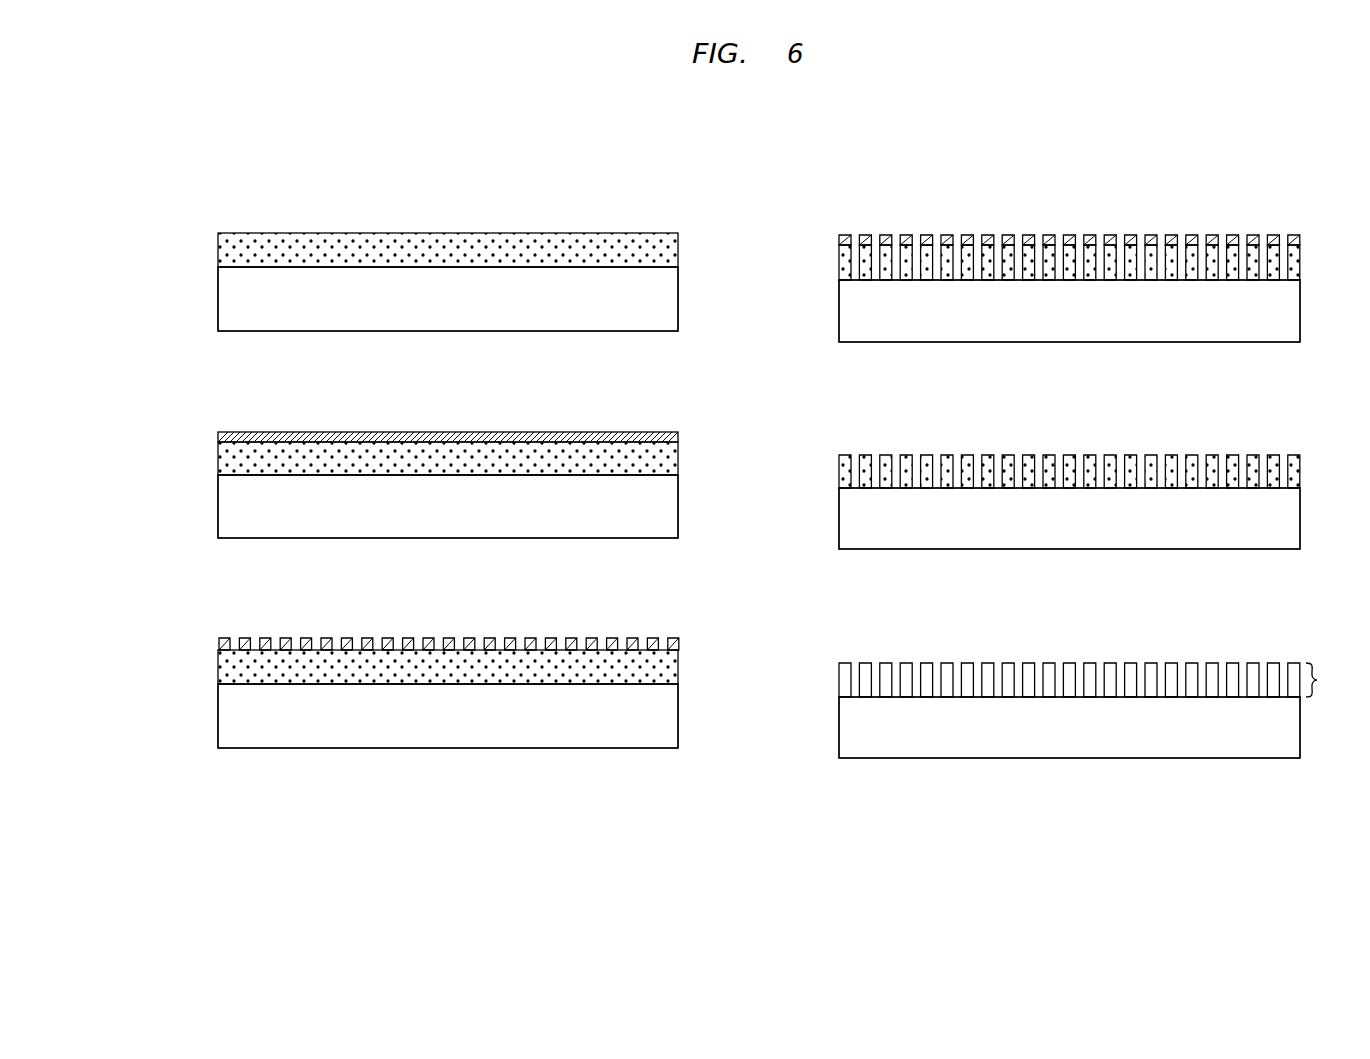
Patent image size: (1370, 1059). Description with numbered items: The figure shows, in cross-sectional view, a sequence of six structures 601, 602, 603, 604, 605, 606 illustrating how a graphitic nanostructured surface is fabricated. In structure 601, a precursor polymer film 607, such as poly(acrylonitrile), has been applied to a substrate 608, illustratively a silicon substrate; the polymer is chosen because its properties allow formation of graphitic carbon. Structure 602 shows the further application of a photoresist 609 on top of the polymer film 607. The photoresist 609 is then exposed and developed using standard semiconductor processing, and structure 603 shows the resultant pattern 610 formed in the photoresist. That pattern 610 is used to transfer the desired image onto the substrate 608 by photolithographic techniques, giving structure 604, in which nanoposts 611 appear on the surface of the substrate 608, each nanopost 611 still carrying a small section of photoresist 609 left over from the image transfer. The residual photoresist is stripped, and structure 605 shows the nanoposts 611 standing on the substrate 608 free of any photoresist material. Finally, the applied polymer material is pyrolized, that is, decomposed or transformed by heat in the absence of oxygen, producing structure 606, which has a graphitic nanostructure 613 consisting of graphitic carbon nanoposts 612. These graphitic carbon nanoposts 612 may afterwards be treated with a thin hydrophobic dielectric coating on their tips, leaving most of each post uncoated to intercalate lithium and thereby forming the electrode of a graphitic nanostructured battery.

The structure 601 is at (193, 235).
The structure 602 is at (193, 432).
The structure 603 is at (193, 638).
The structure 604 is at (818, 235).
The structure 605 is at (818, 455).
The structure 606 is at (818, 663).
The polymer film 607 is at (683, 233).
The substrate 608 is at (470, 332).
The photoresist 609 is at (542, 432).
The pattern 610 is at (328, 638).
The nanopost 611 is at (1303, 252).
The graphitic carbon nanopost 612 is at (952, 663).
The graphitic nanostructure 613 is at (1334, 680).